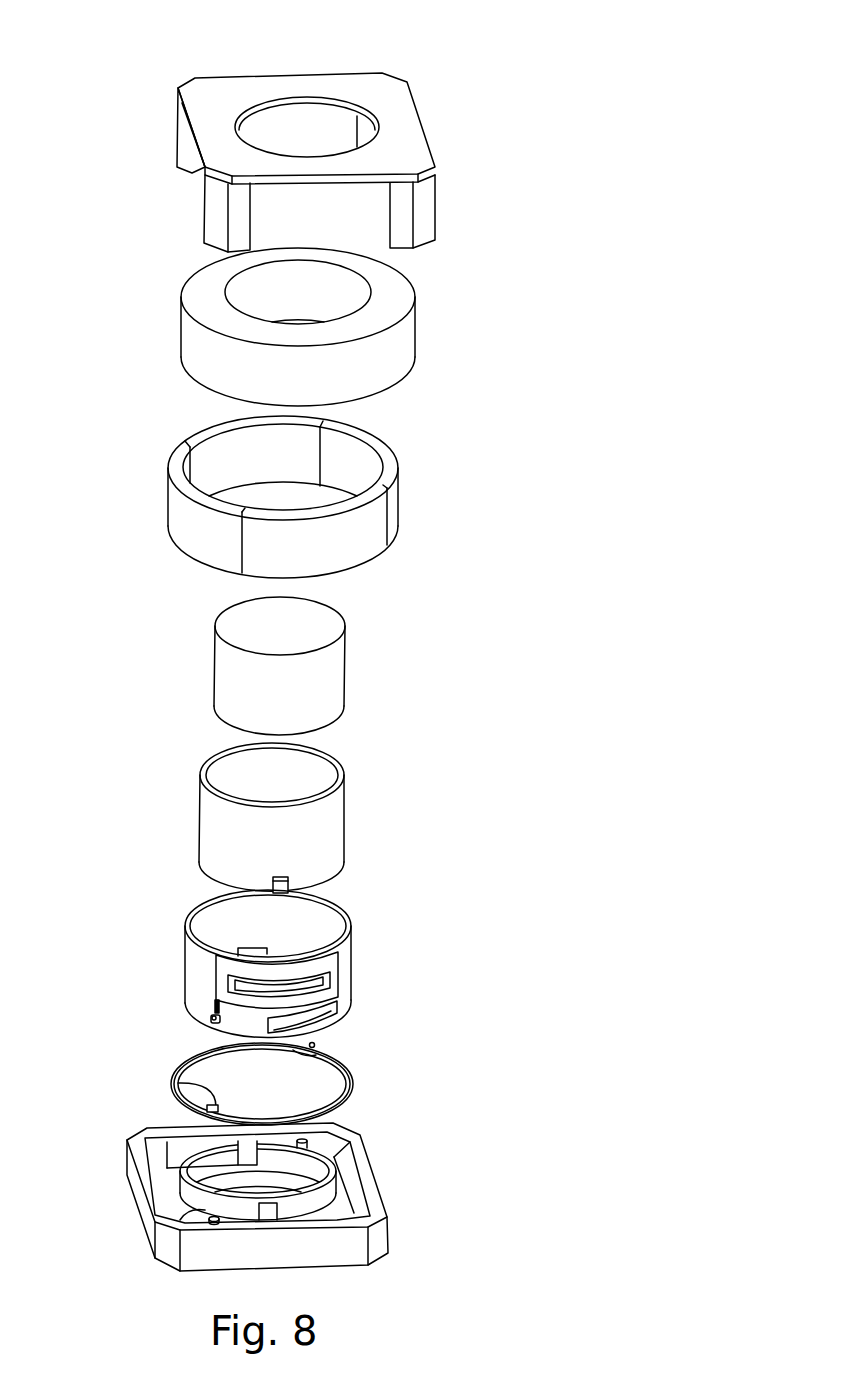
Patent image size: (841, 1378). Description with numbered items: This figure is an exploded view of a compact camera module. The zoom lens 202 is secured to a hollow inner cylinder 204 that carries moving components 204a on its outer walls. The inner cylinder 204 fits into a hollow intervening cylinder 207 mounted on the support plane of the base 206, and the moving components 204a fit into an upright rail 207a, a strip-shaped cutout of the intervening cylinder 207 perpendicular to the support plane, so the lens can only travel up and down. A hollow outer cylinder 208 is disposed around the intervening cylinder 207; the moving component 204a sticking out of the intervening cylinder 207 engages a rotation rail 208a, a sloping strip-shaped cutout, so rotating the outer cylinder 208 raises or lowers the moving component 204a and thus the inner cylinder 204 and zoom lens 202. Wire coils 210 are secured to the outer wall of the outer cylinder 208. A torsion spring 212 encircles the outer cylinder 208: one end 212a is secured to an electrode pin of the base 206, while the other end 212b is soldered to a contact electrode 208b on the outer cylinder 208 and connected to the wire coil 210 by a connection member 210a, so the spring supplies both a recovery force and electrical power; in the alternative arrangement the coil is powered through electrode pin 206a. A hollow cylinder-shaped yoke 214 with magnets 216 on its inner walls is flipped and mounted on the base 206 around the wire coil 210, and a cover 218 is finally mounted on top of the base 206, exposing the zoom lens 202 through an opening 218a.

The zoom lens 202 is at (323, 683).
The hollow inner cylinder 204 is at (323, 840).
The moving component 204a is at (290, 883).
The base 206 is at (377, 1238).
The electrode pin 206a is at (183, 1212).
The hollow intervening cylinder 207 is at (187, 1200).
The upright rail 207a is at (270, 1198).
The hollow outer cylinder 208 is at (200, 958).
The rotation rail 208a is at (315, 1017).
The contact electrode 208b is at (211, 1018).
The wire coil 210 is at (333, 963).
The connection member 210a is at (213, 1003).
The torsion spring 212 is at (353, 1082).
The end of torsion spring 212a is at (318, 1043).
The other end of torsion spring 212b is at (173, 1080).
The hollow cylinder-shaped yoke 214 is at (393, 347).
The magnet 216 is at (360, 525).
The cover 218 is at (403, 147).
The opening 218a is at (308, 122).